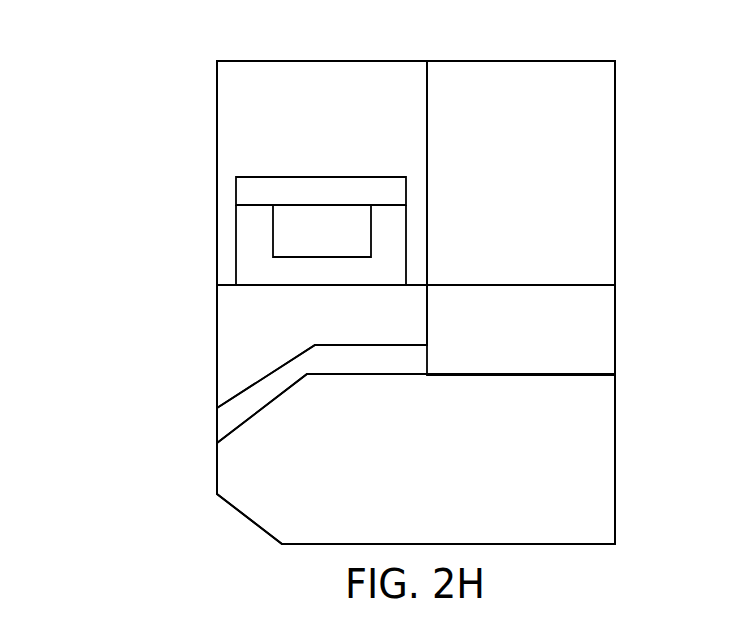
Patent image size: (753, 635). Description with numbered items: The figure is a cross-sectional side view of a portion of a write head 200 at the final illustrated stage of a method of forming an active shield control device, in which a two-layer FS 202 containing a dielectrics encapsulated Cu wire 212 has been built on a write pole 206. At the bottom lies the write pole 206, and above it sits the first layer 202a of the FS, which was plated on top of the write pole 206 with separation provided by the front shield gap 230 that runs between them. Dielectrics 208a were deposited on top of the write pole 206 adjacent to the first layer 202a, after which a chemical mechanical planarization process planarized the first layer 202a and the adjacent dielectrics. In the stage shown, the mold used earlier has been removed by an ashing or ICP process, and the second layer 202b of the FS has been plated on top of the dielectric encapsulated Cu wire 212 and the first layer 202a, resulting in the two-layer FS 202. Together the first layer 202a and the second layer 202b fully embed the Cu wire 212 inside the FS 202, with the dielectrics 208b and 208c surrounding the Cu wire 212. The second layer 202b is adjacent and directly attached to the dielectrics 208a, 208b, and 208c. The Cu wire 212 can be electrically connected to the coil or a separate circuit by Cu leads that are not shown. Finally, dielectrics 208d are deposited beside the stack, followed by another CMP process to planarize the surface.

The write head 200 is at (145, 53).
The two-layer FS 202 is at (209, 60).
The first layer of the FS 202a is at (343, 337).
The second layer of the FS 202b is at (343, 141).
The write pole 206 is at (433, 485).
The dielectrics 208a is at (543, 354).
The dielectrics 208b is at (393, 278).
The dielectrics 208c is at (393, 201).
The dielectrics 208d is at (545, 220).
The Cu wire 212 is at (338, 250).
The front shield gap 230 is at (422, 370).